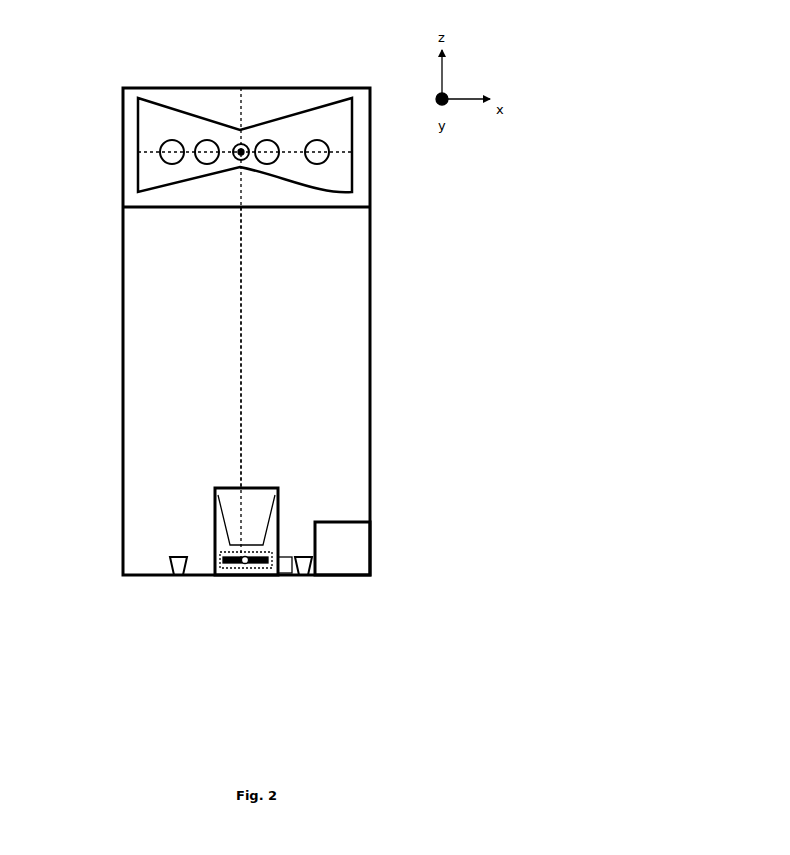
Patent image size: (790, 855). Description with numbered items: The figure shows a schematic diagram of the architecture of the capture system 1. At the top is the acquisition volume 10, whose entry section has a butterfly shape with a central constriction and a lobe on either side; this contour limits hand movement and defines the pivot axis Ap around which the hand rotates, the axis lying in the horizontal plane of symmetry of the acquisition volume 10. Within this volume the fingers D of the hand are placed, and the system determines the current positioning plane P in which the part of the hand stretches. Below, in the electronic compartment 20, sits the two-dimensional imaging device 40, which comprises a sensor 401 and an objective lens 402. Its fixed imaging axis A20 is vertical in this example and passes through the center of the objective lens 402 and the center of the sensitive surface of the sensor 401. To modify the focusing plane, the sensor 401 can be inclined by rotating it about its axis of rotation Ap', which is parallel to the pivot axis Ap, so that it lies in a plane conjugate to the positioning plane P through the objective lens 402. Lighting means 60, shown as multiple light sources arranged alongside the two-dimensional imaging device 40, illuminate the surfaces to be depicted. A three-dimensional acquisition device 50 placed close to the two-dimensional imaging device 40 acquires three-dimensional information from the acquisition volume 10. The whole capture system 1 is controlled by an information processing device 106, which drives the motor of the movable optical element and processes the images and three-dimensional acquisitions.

The capture system 1 is at (100, 249).
The acquisition volume 10 is at (175, 130).
The current positioning plane P is at (161, 154).
The pivot axis Ap is at (216, 97).
The fingers D is at (180, 163).
The fixed imaging axis A20 is at (241, 354).
The two-dimensional imaging device 40 is at (215, 530).
The objective lens 402 is at (248, 512).
The sensor 401 is at (218, 575).
The axis of rotation Ap' is at (249, 614).
The electronic compartment 20 is at (138, 560).
The lighting means 60 is at (170, 575).
The three-dimensional acquisition device 50 is at (283, 575).
The information processing device 106 is at (342, 548).